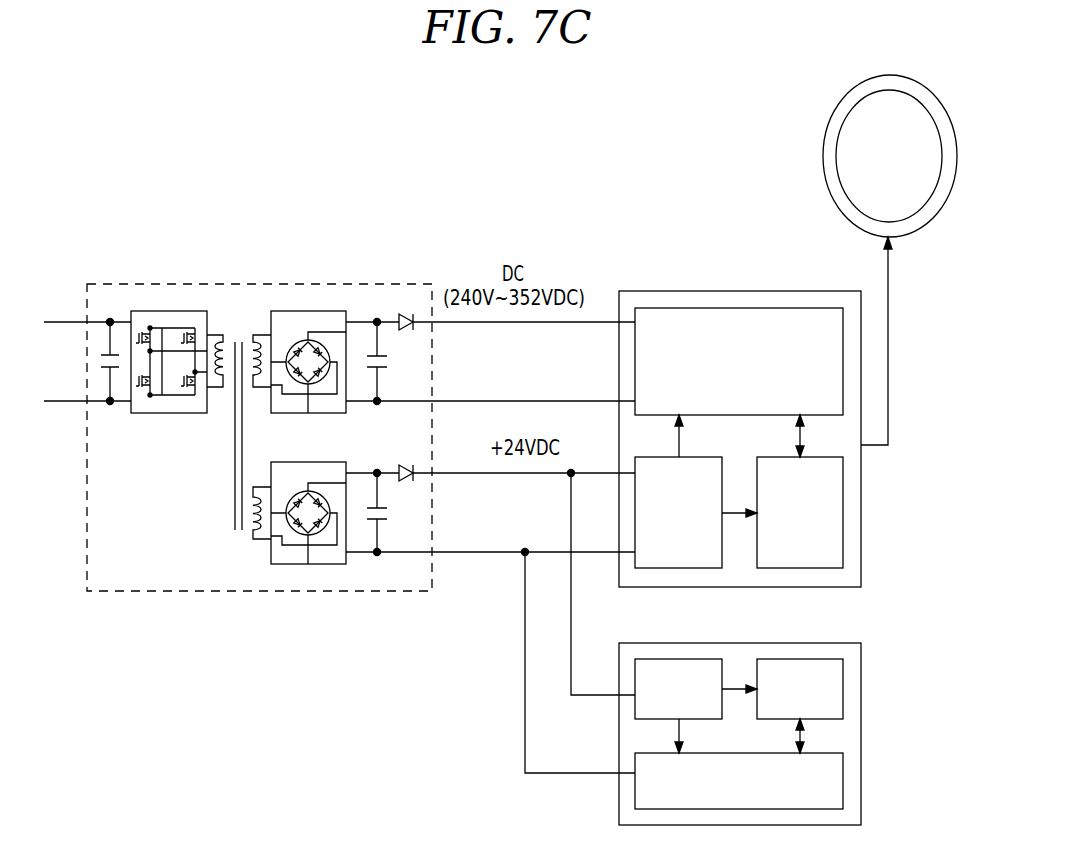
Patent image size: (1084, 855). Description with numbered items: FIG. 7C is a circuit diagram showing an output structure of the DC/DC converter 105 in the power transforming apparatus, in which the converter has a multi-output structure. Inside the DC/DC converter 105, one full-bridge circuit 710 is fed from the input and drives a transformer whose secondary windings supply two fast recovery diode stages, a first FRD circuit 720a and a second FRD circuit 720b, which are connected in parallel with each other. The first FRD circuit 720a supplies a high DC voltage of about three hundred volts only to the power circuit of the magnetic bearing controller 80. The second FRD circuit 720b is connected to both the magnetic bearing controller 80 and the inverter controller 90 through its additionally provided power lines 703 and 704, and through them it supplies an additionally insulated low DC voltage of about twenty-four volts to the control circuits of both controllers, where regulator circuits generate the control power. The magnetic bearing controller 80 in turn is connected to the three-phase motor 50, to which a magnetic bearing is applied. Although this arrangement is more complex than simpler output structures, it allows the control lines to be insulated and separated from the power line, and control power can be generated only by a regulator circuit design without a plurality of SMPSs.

The DC/DC converter 105 is at (190, 283).
The full-bridge circuit 710 is at (183, 413).
The first FRD circuit 720a is at (308, 311).
The second FRD circuit 720b is at (325, 564).
The power line 703 is at (568, 478).
The power line 704 is at (522, 556).
The three-phase motor 50 is at (823, 157).
The magnetic bearing controller 80 is at (861, 541).
The inverter controller 90 is at (861, 740).